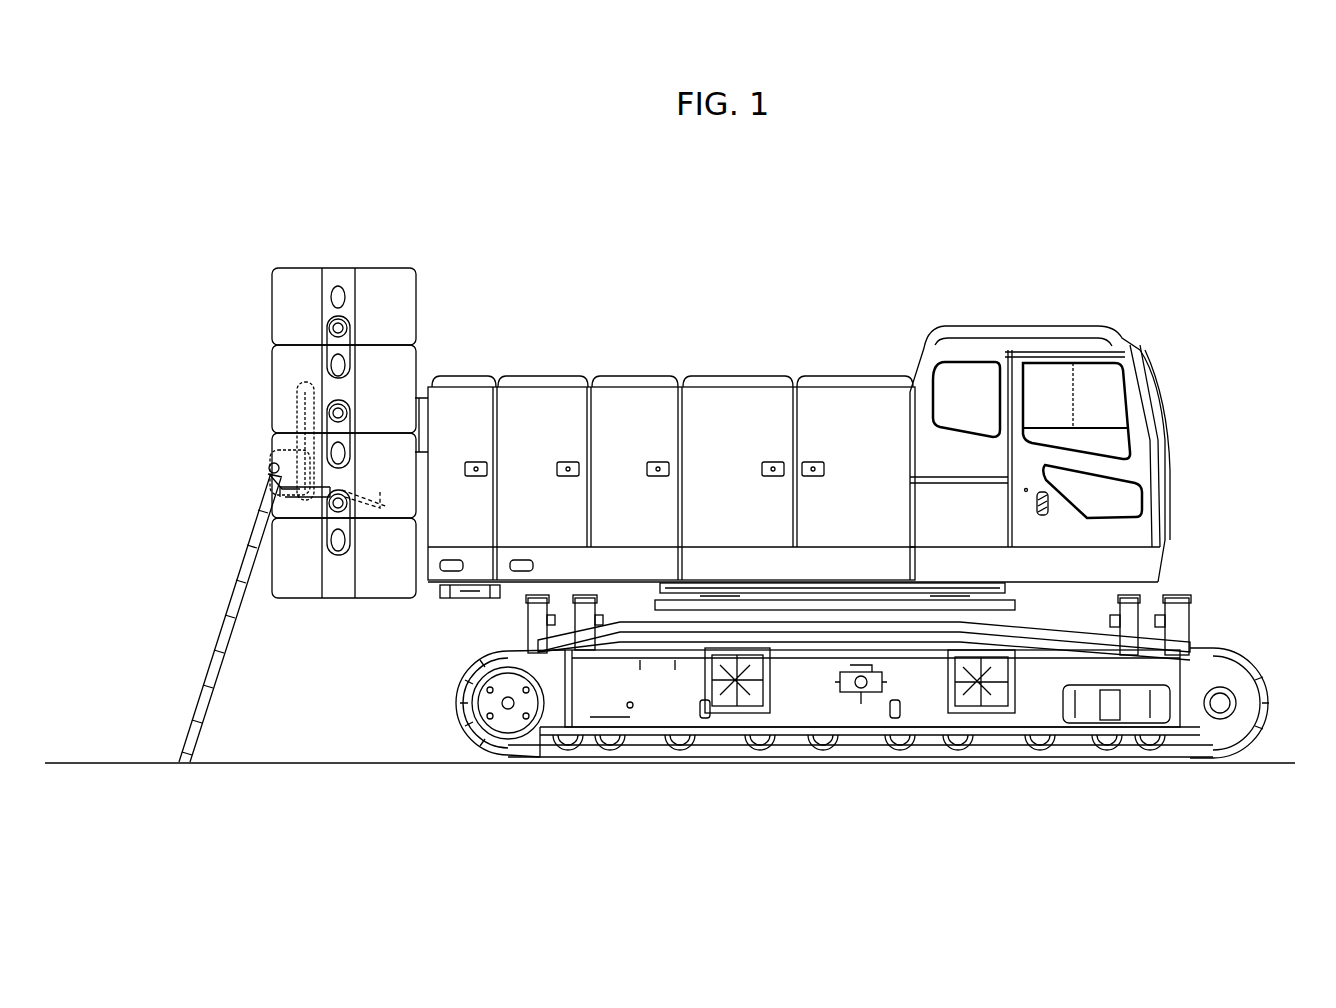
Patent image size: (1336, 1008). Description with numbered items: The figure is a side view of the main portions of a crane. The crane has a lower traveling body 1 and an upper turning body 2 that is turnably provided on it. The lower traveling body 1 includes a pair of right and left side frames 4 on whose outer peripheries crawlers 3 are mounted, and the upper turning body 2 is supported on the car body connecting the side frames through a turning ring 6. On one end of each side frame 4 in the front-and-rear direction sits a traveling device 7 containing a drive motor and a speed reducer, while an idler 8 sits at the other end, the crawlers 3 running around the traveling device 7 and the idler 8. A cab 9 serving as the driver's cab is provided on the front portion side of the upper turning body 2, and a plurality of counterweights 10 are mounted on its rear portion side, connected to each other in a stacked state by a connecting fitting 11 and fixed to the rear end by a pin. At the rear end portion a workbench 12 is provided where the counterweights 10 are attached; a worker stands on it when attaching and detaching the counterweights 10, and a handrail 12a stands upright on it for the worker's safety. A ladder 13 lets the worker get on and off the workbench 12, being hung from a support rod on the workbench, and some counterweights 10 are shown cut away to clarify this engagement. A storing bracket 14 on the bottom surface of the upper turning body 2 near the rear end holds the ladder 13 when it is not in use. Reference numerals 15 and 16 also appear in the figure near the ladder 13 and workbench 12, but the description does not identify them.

The lower traveling body 1 is at (1205, 597).
The upper turning body 2 is at (740, 360).
The crawlers 3 is at (455, 727).
The side frames 4 is at (808, 703).
The turning ring 6 is at (877, 598).
The traveling device 7 is at (543, 740).
The idler 8 is at (1218, 740).
The cab 9 is at (1073, 360).
The counterweights 10 is at (282, 305).
The connecting fitting 11 is at (343, 345).
The workbench 12 is at (297, 497).
The handrail 12a is at (308, 383).
The ladder 13 is at (212, 640).
The storing bracket 14 is at (470, 600).
The hook 15 is at (270, 487).
The bracket 16 is at (300, 497).